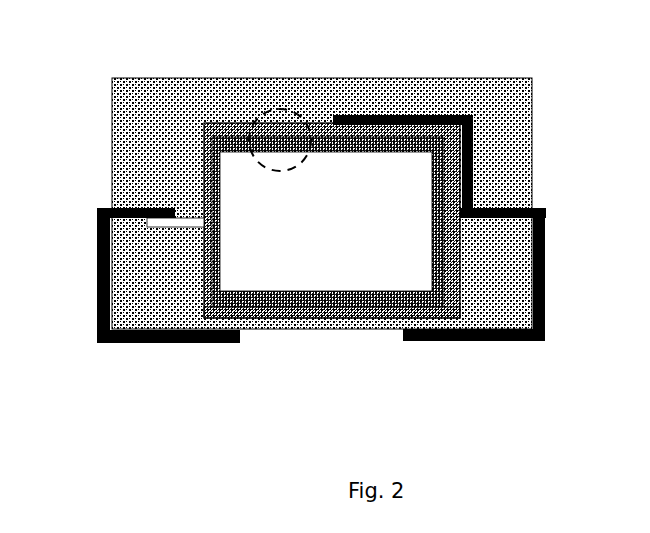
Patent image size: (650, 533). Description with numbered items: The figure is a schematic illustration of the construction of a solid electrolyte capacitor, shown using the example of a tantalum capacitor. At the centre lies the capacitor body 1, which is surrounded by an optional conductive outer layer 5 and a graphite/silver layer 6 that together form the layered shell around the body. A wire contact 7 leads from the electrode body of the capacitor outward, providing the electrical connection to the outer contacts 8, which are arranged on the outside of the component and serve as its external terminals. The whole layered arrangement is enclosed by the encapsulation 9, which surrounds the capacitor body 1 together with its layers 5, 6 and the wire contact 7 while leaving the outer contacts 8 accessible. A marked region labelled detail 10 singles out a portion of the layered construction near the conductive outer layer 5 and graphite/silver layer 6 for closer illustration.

The capacitor body 1 is at (303, 258).
The optional conductive outer layer 5 is at (205, 170).
The graphite/silver layer 6 is at (346, 318).
The wire contact to electrode body 7 is at (157, 232).
The outer contacts 8 is at (96, 243).
The encapsulation 9 is at (513, 133).
The detail 10 is at (277, 106).